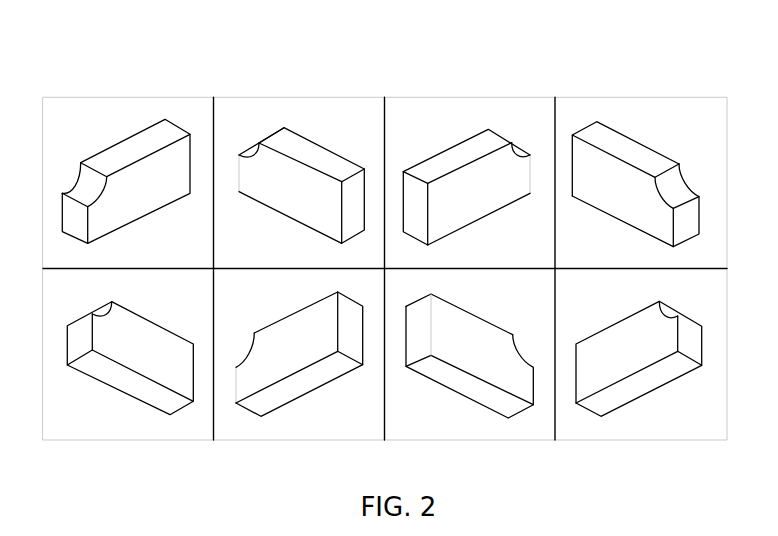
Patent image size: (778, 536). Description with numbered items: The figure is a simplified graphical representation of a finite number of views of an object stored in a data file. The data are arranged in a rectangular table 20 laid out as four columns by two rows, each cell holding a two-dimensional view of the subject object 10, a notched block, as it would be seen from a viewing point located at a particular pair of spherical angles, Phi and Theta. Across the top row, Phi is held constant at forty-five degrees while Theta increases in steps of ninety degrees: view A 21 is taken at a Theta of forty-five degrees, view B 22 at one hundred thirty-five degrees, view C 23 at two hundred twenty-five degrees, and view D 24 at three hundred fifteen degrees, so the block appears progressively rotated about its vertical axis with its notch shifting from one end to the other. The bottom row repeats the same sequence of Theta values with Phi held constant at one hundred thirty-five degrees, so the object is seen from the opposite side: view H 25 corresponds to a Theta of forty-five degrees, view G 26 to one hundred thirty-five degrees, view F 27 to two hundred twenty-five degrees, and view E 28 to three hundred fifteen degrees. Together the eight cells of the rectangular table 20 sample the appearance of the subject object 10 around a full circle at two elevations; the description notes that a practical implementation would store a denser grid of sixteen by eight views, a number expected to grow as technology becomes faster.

The subject object 10 is at (118, 145).
The rectangular table 20 is at (346, 27).
The view A 21 is at (132, 97).
The view B 22 is at (291, 97).
The view C 23 is at (460, 97).
The view D 24 is at (630, 97).
The view H 25 is at (127, 441).
The view G 26 is at (293, 441).
The view F 27 is at (473, 441).
The view E 28 is at (643, 441).